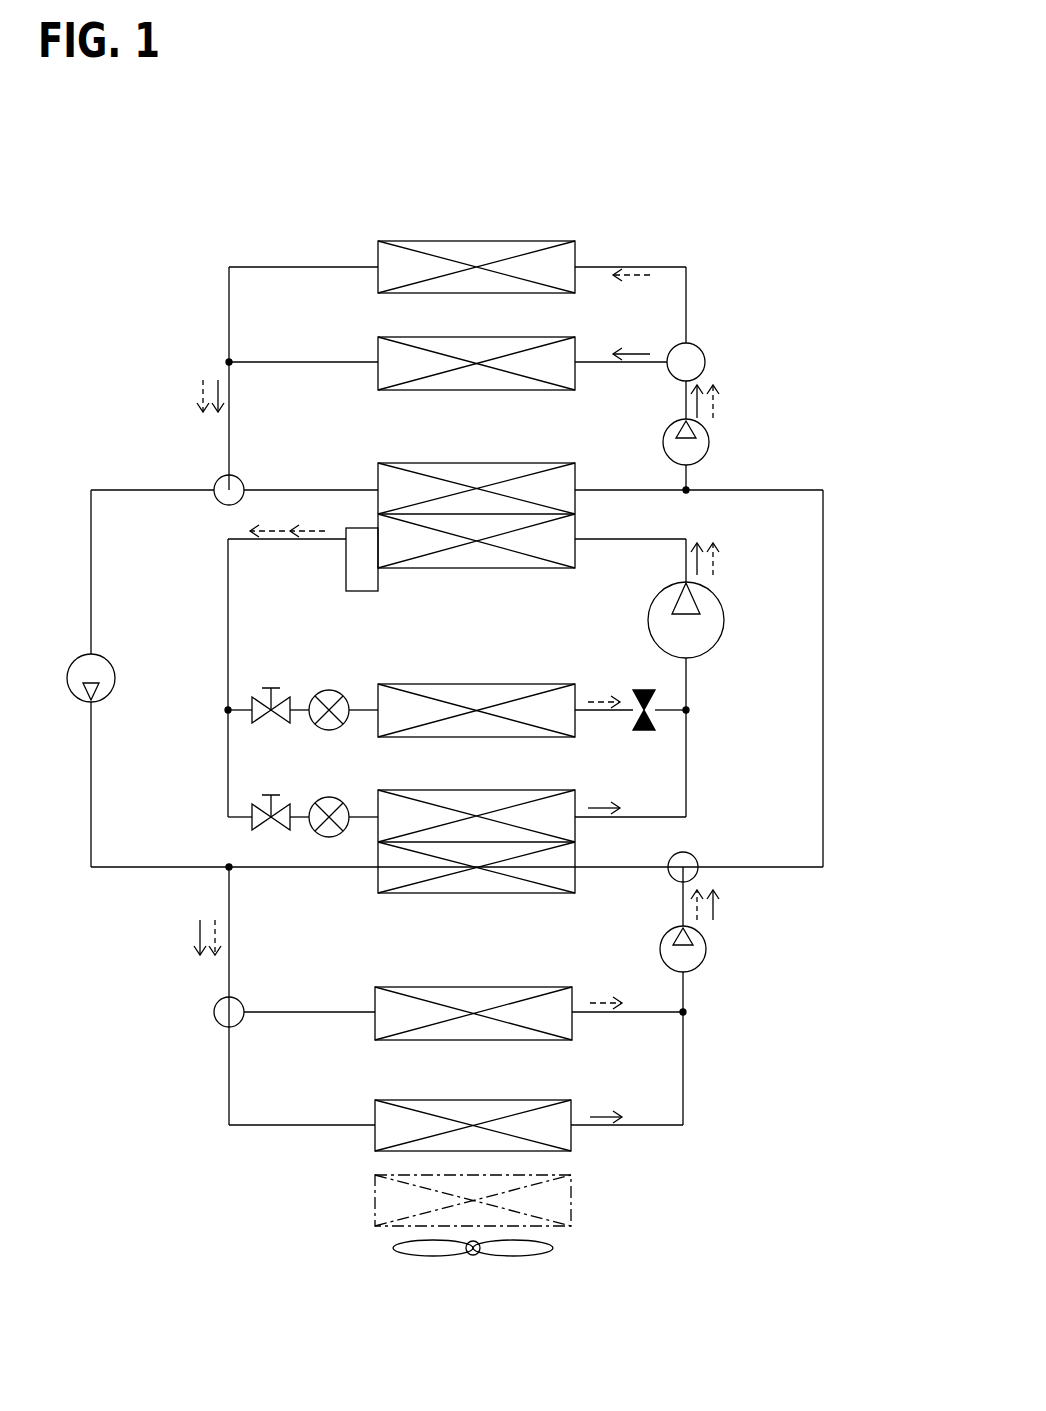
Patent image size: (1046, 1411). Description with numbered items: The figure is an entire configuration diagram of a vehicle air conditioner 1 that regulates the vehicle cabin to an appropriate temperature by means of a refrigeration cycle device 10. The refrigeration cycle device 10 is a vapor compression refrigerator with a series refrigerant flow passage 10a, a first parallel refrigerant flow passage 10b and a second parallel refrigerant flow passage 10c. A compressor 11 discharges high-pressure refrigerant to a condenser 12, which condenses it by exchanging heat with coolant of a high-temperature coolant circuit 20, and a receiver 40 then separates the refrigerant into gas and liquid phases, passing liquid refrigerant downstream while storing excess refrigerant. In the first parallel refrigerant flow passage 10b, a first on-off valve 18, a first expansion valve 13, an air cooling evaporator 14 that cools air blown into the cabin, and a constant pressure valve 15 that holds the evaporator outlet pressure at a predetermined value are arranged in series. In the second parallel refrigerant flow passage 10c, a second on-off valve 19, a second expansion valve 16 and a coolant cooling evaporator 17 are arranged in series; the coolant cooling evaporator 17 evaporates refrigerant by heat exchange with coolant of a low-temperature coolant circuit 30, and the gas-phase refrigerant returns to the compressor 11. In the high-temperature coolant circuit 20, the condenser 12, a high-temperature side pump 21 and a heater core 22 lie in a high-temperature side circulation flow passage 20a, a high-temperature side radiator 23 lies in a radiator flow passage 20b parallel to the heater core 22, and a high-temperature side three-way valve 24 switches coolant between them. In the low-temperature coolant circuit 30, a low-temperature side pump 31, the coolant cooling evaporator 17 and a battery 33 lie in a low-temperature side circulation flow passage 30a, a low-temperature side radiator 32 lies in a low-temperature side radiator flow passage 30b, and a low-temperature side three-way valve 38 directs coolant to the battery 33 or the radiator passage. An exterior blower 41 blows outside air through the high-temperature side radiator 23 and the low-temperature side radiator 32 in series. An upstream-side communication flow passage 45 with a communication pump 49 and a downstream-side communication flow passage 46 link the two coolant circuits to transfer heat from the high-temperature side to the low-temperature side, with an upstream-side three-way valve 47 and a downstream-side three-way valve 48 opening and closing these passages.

The vehicle air conditioner 1 is at (170, 320).
The refrigeration cycle device 10 is at (208, 553).
The series refrigerant flow passage 10a is at (228, 598).
The first parallel refrigerant flow passage 10b is at (243, 708).
The second parallel refrigerant flow passage 10c is at (245, 815).
The compressor 11 is at (724, 612).
The condenser 12 is at (537, 568).
The first expansion valve 13 is at (329, 690).
The air cooling evaporator 14 is at (450, 684).
The constant pressure valve 15 is at (644, 690).
The second expansion valve 16 is at (329, 797).
The coolant cooling evaporator 17 is at (498, 790).
The first on-off valve 18 is at (271, 688).
The second on-off valve 19 is at (271, 795).
The high-temperature coolant circuit 20 is at (262, 252).
The high-temperature side circulation flow passage 20a is at (292, 365).
The radiator flow passage 20b is at (660, 267).
The high-temperature side pump 21 is at (709, 442).
The heater core 22 is at (470, 390).
The high-temperature side radiator 23 is at (478, 241).
The high-temperature side three-way valve 24 is at (705, 362).
The low-temperature coolant circuit 30 is at (262, 1152).
The low-temperature side circulation flow passage 30a is at (300, 1012).
The low-temperature side radiator flow passage 30b is at (300, 1125).
The low-temperature side pump 31 is at (707, 949).
The low-temperature side radiator 32 is at (478, 1100).
The battery 33 is at (478, 987).
The low-temperature side three-way valve 38 is at (213, 1012).
The receiver 40 is at (362, 591).
The exterior blower 41 is at (553, 1248).
The upstream-side communication flow passage 45 is at (91, 605).
The downstream-side communication flow passage 46 is at (823, 604).
The upstream-side three-way valve 47 is at (214, 487).
The downstream-side three-way valve 48 is at (700, 875).
The communication pump 49 is at (72, 690).